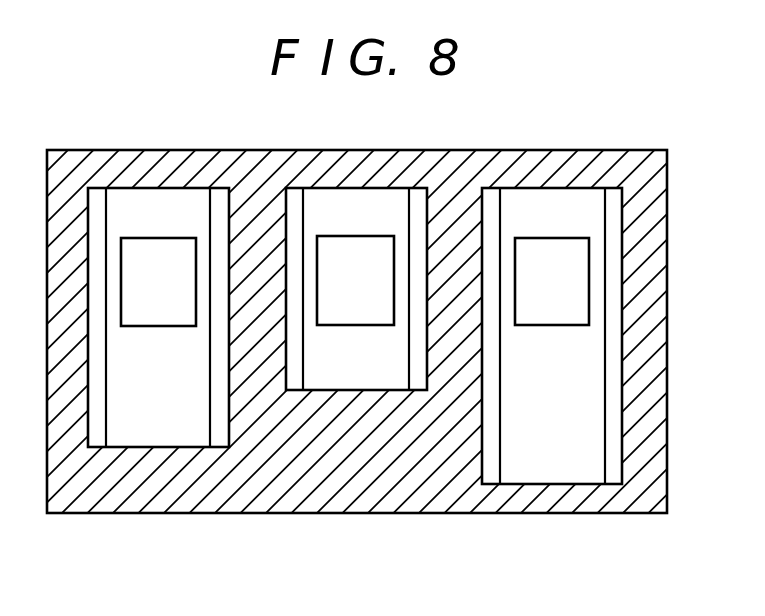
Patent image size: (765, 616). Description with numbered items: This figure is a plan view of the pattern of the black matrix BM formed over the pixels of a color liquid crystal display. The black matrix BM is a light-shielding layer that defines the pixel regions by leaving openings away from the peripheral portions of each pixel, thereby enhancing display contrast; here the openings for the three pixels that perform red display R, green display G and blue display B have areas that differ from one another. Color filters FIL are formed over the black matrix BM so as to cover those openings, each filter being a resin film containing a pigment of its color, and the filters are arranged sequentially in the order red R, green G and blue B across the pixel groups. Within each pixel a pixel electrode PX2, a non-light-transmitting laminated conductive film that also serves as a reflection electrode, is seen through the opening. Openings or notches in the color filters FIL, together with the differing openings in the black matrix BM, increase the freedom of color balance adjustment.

The black matrix BM is at (255, 498).
The pixel electrode PX2 is at (357, 243).
The color filter FIL is at (303, 335).
The red filter R is at (158, 372).
The green filter G is at (369, 344).
The blue filter B is at (552, 372).